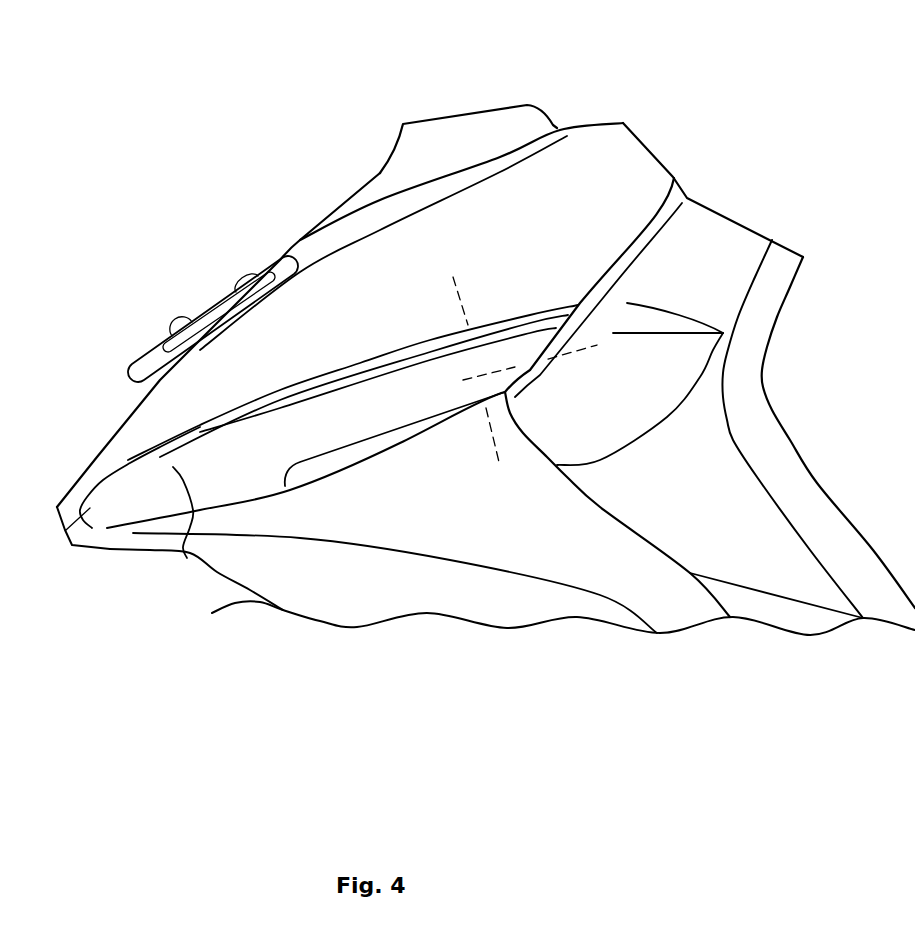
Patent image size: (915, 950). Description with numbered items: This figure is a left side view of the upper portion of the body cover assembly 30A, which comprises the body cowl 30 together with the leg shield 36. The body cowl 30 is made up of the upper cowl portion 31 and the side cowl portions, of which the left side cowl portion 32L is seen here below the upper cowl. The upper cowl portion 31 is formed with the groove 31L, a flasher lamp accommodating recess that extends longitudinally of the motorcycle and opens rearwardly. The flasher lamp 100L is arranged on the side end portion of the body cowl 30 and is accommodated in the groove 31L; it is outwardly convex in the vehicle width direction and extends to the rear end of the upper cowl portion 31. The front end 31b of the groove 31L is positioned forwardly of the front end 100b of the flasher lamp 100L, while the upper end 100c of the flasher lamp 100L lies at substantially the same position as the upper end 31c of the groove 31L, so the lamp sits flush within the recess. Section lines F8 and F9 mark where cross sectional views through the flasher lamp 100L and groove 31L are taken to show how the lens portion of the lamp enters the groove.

The body cowl 30 is at (460, 100).
The body cover assembly 30A is at (750, 123).
The upper cowl portion 31 is at (567, 180).
The front end of groove 31b is at (62, 550).
The upper end of groove 31c is at (282, 387).
The groove 31L is at (137, 497).
The side cowl portion 32L is at (573, 570).
The leg shield 36 is at (803, 488).
The front end of flasher lamp 100b is at (187, 558).
The upper end of flasher lamp 100c is at (367, 360).
The flasher lamp 100L is at (367, 425).
The section line F8- F8 is at (458, 285).
The section line F9- F9 is at (477, 370).